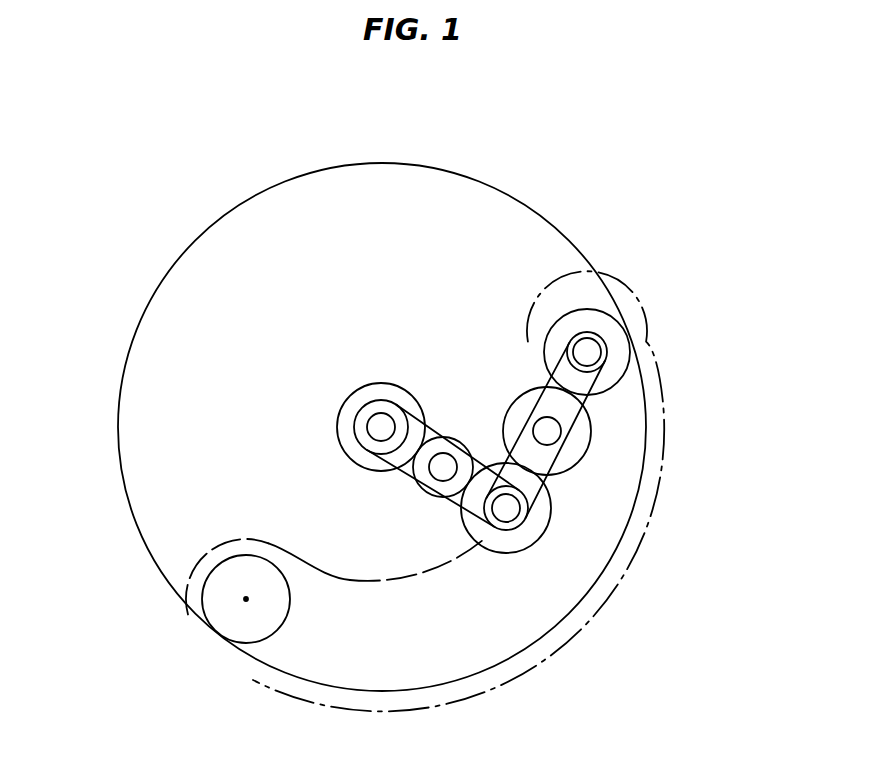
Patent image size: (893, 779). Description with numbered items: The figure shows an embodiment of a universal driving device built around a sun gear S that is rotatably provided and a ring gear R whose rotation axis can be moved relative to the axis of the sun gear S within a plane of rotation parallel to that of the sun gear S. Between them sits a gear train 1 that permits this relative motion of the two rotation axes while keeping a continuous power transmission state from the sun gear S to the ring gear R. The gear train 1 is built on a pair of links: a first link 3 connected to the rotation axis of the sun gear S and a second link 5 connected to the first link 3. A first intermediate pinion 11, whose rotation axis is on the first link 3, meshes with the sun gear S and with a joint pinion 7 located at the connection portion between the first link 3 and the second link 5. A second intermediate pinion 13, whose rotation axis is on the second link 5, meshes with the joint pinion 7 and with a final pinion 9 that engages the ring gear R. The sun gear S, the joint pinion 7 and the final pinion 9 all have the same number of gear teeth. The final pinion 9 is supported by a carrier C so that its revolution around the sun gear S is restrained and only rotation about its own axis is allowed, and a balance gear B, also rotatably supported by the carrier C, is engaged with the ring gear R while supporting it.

The gear train 1 is at (562, 540).
The first link 3 is at (402, 474).
The second link 5 is at (542, 480).
The joint pinion 7 is at (513, 549).
The final pinion 9 is at (610, 327).
The first intermediate pinion 11 is at (427, 491).
The second intermediate pinion 13 is at (583, 453).
The sun gear S is at (366, 392).
The ring gear R is at (162, 282).
The balance gear B is at (222, 606).
The carrier C is at (662, 397).